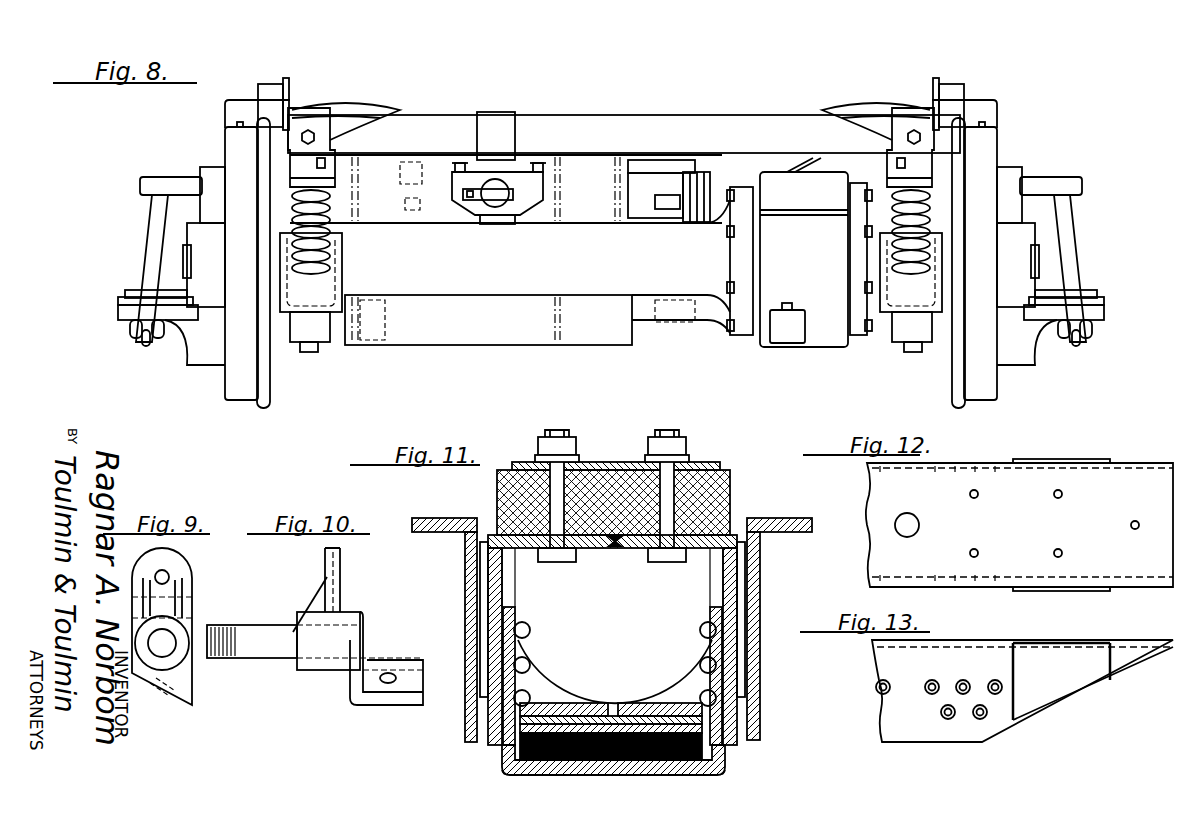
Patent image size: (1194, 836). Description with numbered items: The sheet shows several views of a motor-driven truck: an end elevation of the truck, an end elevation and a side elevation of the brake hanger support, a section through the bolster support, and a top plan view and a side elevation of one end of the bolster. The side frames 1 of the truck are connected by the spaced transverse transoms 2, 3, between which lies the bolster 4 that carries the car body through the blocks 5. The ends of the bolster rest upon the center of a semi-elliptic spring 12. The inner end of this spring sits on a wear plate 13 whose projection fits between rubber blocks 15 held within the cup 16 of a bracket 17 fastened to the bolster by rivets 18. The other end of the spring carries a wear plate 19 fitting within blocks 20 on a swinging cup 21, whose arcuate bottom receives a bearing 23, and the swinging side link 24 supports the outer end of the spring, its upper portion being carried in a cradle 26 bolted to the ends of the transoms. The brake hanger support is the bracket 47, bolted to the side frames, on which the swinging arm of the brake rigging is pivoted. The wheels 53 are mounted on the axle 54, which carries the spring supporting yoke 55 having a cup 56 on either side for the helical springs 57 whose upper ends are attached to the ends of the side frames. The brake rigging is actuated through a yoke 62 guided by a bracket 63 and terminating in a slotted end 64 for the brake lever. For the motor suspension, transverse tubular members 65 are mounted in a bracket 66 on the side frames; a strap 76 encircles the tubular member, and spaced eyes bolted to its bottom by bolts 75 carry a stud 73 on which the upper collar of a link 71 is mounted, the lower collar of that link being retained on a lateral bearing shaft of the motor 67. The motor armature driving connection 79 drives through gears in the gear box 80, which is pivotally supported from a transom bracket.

In FIG. 8, the side frames 1 is at (383, 118).
In FIG. 11, the transom 2 is at (431, 517).
In FIG. 11, the transom 3 is at (797, 533).
In FIG. 11, the bolster 4 is at (737, 533).
In FIG. 12, the bolster 4 is at (1127, 482).
In FIG. 13, the bolster 4 is at (1133, 663).
In FIG. 11, the blocks 5 is at (722, 475).
In FIG. 8, the semi-elliptic spring 12 is at (137, 297).
In FIG. 11, the semi-elliptic spring 12 is at (565, 702).
In FIG. 11, the wear plate 13 is at (505, 758).
In FIG. 11, the rubber blocks 15 is at (707, 752).
In FIG. 11, the cup 16 is at (722, 775).
In FIG. 11, the bracket 17 is at (520, 607).
In FIG. 11, the rivets 18 is at (529, 665).
In FIG. 8, the wear plate 19 is at (120, 303).
In FIG. 8, the blocks 20 is at (120, 311).
In FIG. 8, the swinging cup 21 is at (135, 321).
In FIG. 8, the bearing 23 is at (145, 346).
In FIG. 8, the swinging side link 24 is at (148, 241).
In FIG. 8, the cradle 26 is at (143, 203).
In FIG. 9, the bracket 47 is at (190, 693).
In FIG. 10, the bracket 47 is at (328, 667).
In FIG. 8, the wheels 53 is at (225, 375).
In FIG. 8, the axle 54 is at (182, 257).
In FIG. 8, the spring supporting yoke 55 is at (283, 355).
In FIG. 8, the cup 56 is at (320, 313).
In FIG. 8, the helical springs 57 is at (345, 250).
In FIG. 8, the yoke 62 is at (300, 110).
In FIG. 8, the bracket 63 is at (270, 84).
In FIG. 8, the slotted end 64 is at (227, 112).
In FIG. 8, the transverse tubular members 65 is at (643, 115).
In FIG. 8, the bracket 66 is at (322, 118).
In FIG. 8, the motor 67 is at (480, 346).
In FIG. 8, the link 71 is at (512, 225).
In FIG. 8, the stud 73 is at (470, 205).
In FIG. 8, the bolts 75 is at (455, 166).
In FIG. 8, the strap 76 is at (495, 112).
In FIG. 8, the motor armature driving connection 79 is at (712, 172).
In FIG. 8, the gear box 80 is at (812, 293).